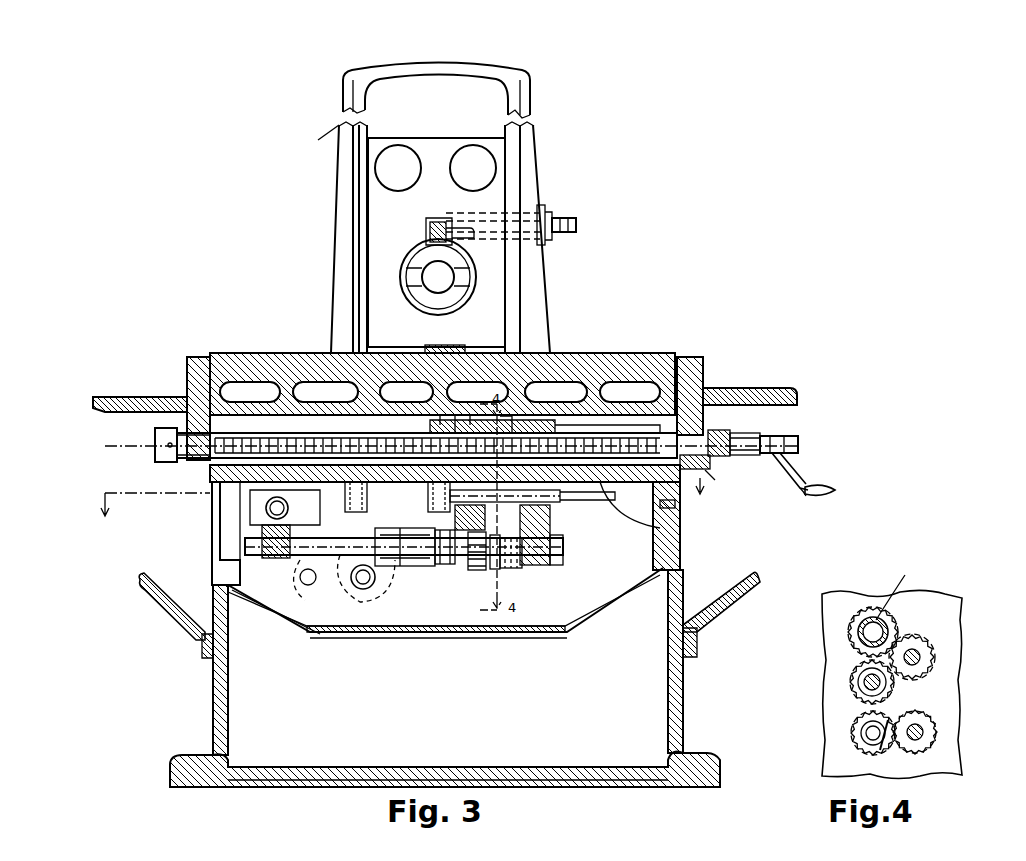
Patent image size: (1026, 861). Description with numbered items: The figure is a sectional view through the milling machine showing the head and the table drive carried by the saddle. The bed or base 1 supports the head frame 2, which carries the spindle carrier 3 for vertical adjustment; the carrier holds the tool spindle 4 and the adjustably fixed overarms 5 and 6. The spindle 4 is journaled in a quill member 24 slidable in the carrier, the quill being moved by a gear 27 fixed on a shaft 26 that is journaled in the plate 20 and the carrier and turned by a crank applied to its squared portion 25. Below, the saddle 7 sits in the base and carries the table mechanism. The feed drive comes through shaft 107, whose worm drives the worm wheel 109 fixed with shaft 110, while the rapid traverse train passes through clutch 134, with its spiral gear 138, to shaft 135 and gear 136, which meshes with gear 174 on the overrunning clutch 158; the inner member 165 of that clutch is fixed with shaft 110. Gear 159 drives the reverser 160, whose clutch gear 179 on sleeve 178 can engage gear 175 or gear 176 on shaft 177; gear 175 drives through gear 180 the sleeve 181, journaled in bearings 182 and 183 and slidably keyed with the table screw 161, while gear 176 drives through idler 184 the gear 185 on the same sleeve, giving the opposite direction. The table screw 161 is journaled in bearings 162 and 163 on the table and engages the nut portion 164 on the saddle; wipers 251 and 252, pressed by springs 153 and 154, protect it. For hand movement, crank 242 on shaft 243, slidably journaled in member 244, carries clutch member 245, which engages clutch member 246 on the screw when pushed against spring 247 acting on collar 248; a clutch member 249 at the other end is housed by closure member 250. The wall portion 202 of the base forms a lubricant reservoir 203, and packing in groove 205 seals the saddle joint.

In FIG. 3, the bed or base 1 is at (683, 537).
In FIG. 3, the head frame 2 is at (551, 277).
In FIG. 3, the spindle carrier 3 is at (498, 192).
In FIG. 3, the tool spindle 4 is at (456, 272).
In FIG. 3, the overarm 5 is at (398, 160).
In FIG. 3, the overarm 6 is at (473, 160).
In FIG. 3, the saddle 7 is at (436, 502).
In FIG. 3, the plate 20 is at (546, 212).
In FIG. 3, the quill member 24 is at (463, 298).
In FIG. 3, the squared portion 25 is at (570, 234).
In FIG. 3, the shaft 26 is at (462, 240).
In FIG. 3, the gear 27 is at (428, 228).
In FIG. 3, the shaft 107 is at (288, 505).
In FIG. 3, the worm wheel 109 is at (270, 560).
In FIG. 3, the shaft 110 is at (345, 538).
In FIG. 4, the shaft 110 is at (873, 740).
In FIG. 3, the clutch 134 is at (445, 565).
In FIG. 4, the shaft 135 is at (922, 738).
In FIG. 4, the gear 136 is at (930, 728).
In FIG. 3, the spiral gear 138 is at (369, 584).
In FIG. 3, the spring 153 is at (371, 503).
In FIG. 3, the spring 154 is at (412, 495).
In FIG. 3, the overrunning clutch 158 is at (470, 635).
In FIG. 3, the gear 159 is at (505, 570).
In FIG. 4, the gear 159 is at (855, 740).
In FIG. 3, the reverser 160 is at (580, 492).
In FIG. 3, the table screw 161 is at (612, 438).
In FIG. 4, the table screw 161 is at (870, 632).
In FIG. 3, the bearing 162 is at (180, 456).
In FIG. 3, the bearing 163 is at (700, 470).
In FIG. 3, the nut portion 164 is at (289, 393).
In FIG. 3, the inner member 165 is at (548, 555).
In FIG. 3, the gear 174 is at (495, 570).
In FIG. 4, the gear 174 is at (888, 748).
In FIG. 3, the gear 175 is at (448, 512).
In FIG. 3, the gear 176 is at (550, 520).
In FIG. 4, the gear 176 is at (890, 694).
In FIG. 3, the shaft 177 is at (490, 515).
In FIG. 4, the shaft 177 is at (866, 678).
In FIG. 3, the sleeve 178 is at (505, 491).
In FIG. 3, the clutch gear 179 is at (484, 545).
In FIG. 4, the clutch gear 179 is at (852, 690).
In FIG. 3, the gear 180 is at (477, 393).
In FIG. 3, the sleeve 181 is at (490, 404).
In FIG. 4, the sleeve 181 is at (858, 622).
In FIG. 3, the bearing 182 is at (406, 393).
In FIG. 3, the bearing 183 is at (630, 393).
In FIG. 4, the idler 184 is at (920, 645).
In FIG. 3, the gear 185 is at (556, 393).
In FIG. 4, the gear 185 is at (887, 590).
In FIG. 3, the wall portion 202 is at (500, 635).
In FIG. 3, the chamber or reservoir 203 is at (585, 622).
In FIG. 3, the groove 205 is at (660, 504).
In FIG. 3, the crank 242 is at (806, 470).
In FIG. 3, the shaft 243 is at (785, 420).
In FIG. 3, the member 244 is at (818, 496).
In FIG. 3, the clutch member 245 is at (790, 490).
In FIG. 3, the clutch member 246 is at (720, 430).
In FIG. 3, the spring 247 is at (762, 433).
In FIG. 3, the collar 248 is at (798, 437).
In FIG. 3, the clutch member 249 is at (175, 427).
In FIG. 3, the closure member 250 is at (155, 445).
In FIG. 3, the wiper 251 is at (330, 463).
In FIG. 3, the wiper 252 is at (488, 427).